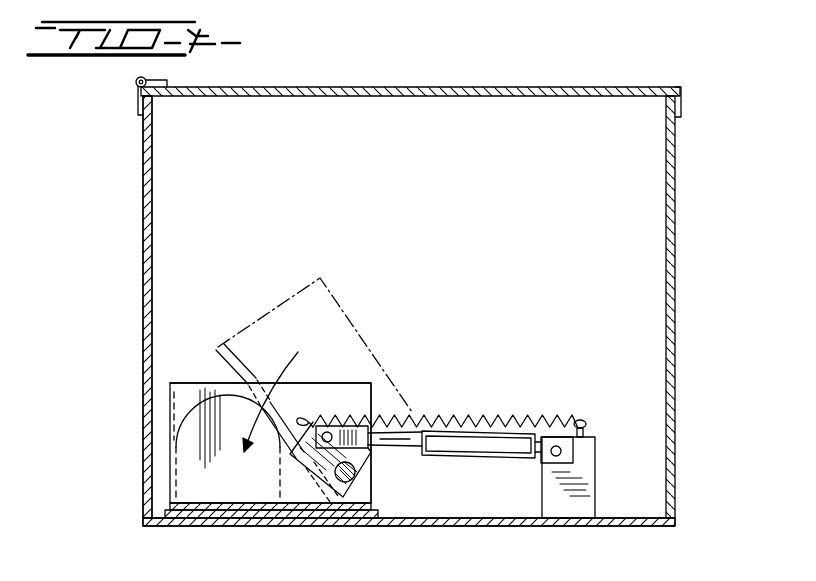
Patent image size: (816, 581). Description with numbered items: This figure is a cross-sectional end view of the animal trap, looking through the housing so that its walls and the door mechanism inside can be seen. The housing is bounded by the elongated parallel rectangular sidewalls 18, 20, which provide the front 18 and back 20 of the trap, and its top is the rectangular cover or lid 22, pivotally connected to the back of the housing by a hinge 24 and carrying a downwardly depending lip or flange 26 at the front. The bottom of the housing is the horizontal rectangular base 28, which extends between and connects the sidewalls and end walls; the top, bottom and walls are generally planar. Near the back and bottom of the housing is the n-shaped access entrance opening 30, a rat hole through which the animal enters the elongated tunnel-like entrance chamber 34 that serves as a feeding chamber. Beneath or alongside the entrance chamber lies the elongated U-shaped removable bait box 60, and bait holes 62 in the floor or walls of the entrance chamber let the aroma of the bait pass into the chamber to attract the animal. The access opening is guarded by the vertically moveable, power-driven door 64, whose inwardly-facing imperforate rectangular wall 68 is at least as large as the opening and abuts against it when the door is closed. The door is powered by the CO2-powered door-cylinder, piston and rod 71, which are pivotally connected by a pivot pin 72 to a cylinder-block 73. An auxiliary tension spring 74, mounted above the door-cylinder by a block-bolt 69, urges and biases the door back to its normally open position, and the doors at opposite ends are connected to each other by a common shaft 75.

The sidewall 18 is at (676, 251).
The sidewall 20 is at (143, 248).
The cover or lid 22 is at (418, 88).
The hinge 24 is at (136, 84).
The lip or flange 26 is at (681, 106).
The base 28 is at (620, 527).
The access entrance opening 30 is at (172, 403).
The entrance chamber 34 is at (195, 476).
The bait box 60 is at (375, 517).
The bait holes 62 is at (226, 503).
The door 64 is at (372, 393).
The wall or surface 68 is at (214, 383).
The block-bolt 69 is at (583, 428).
The door-cylinder, piston and rod 71 is at (418, 447).
The pivot pin 72 is at (560, 451).
The cylinder-block 73 is at (596, 482).
The auxiliary tension spring 74 is at (470, 415).
The common shaft 75 is at (354, 474).